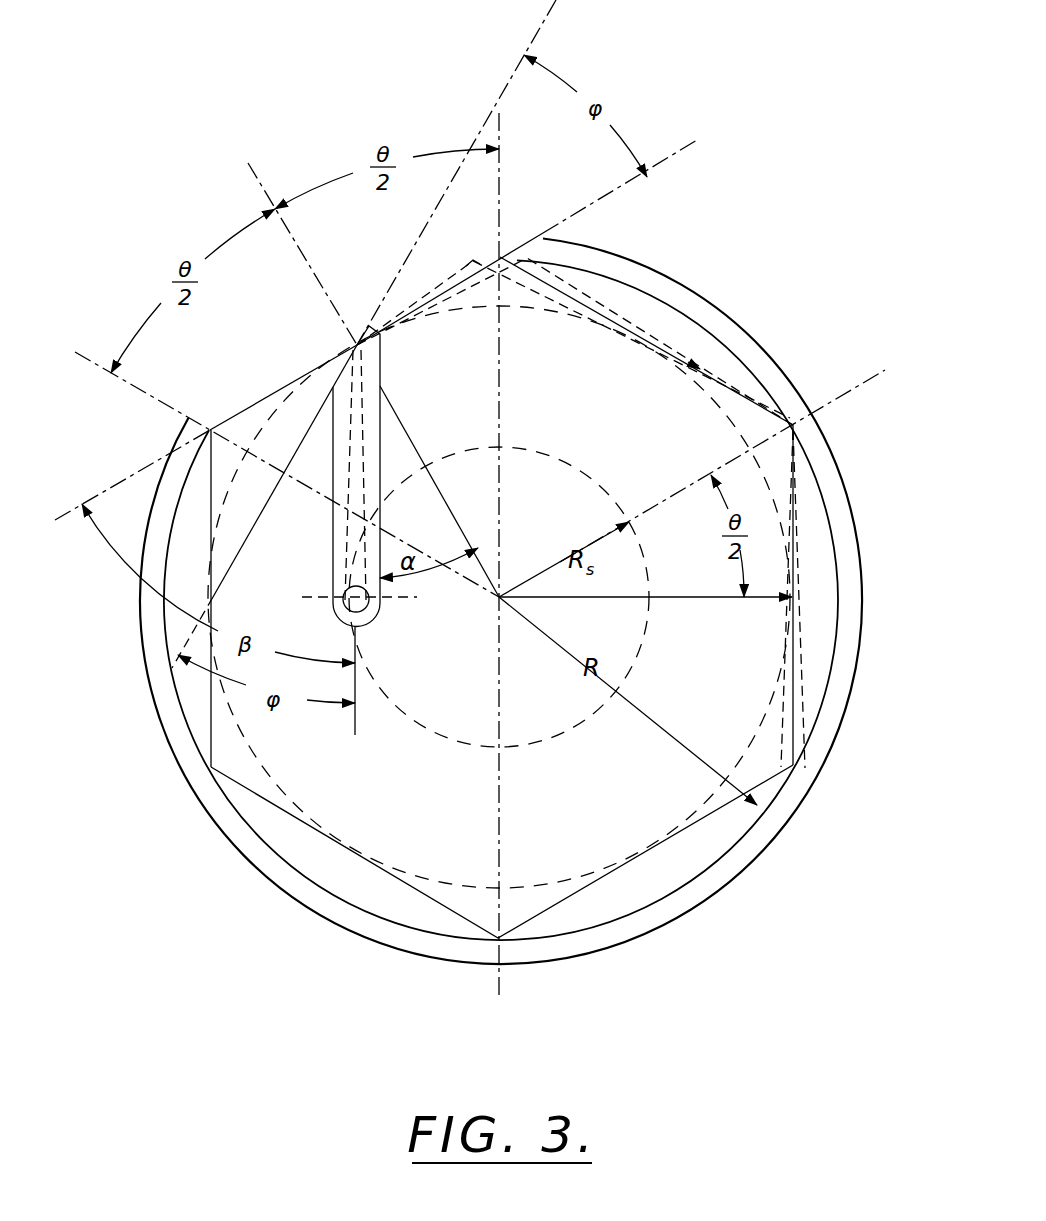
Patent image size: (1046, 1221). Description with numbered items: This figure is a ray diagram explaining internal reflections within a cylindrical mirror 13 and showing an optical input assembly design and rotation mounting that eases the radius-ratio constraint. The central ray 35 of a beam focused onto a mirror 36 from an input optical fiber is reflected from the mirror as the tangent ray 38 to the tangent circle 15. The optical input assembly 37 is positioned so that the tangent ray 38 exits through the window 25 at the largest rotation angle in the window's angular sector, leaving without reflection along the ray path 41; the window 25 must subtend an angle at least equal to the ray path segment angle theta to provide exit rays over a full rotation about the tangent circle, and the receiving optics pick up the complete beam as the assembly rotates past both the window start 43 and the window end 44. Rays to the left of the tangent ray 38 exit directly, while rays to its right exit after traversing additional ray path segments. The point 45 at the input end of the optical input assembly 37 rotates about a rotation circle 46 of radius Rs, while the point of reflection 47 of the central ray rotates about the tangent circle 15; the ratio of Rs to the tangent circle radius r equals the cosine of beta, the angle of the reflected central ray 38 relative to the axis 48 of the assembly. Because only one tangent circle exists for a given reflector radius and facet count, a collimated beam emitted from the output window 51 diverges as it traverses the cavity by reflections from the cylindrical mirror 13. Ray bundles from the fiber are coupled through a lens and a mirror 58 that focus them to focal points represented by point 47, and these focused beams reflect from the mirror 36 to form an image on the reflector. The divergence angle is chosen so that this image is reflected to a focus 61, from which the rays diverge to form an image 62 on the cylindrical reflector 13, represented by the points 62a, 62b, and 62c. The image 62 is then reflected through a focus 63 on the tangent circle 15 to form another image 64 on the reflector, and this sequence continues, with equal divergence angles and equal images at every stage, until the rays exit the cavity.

The cylindrical mirror 13 is at (832, 632).
The tangent circle 15 is at (540, 308).
The window 25 is at (277, 360).
The central ray 35 is at (343, 519).
The mirror 36 is at (345, 362).
The optical input assembly 37 is at (339, 525).
The tangent ray 38 is at (455, 283).
The ray path 41 is at (692, 143).
The window start 43 is at (207, 428).
The window end 44 is at (505, 256).
The point at input end 45 is at (335, 604).
The rotation circle 46 is at (595, 725).
The point of reflection 47 is at (365, 328).
The axis 48 is at (356, 737).
The output window 51 is at (382, 336).
The mirror 58 is at (381, 607).
The focus 61 is at (647, 341).
The image 62 is at (836, 408).
The image point 62a is at (786, 410).
The image point 62b is at (795, 424).
The image point 62c is at (807, 448).
The focus 63 is at (790, 600).
The image 64 is at (812, 762).